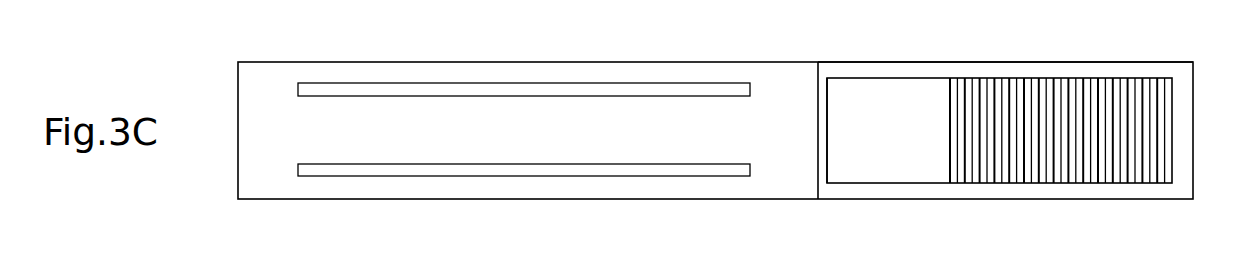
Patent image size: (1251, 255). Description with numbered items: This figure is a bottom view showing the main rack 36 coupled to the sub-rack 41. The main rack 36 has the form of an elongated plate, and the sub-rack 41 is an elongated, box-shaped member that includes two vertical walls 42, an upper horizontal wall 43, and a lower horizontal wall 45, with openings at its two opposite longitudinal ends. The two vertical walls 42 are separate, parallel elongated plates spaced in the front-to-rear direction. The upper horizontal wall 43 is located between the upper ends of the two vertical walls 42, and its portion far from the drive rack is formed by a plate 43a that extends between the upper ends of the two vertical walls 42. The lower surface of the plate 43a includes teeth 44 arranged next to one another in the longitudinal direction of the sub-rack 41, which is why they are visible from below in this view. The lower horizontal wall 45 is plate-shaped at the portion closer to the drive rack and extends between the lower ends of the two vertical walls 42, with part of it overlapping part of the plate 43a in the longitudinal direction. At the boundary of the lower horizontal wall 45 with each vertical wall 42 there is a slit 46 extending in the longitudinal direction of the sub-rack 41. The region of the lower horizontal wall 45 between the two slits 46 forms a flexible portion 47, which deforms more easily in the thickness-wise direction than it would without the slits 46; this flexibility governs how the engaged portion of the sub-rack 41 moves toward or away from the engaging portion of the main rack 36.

The main rack 36 is at (828, 125).
The sub-rack 41 is at (1003, 62).
The vertical walls 42 is at (1187, 70).
The upper horizontal wall 43 is at (999, 130).
The plate 43a is at (871, 92).
The teeth 44 is at (979, 126).
The lower horizontal wall 45 is at (788, 95).
The slit 46 is at (491, 88).
The flexible portion 47 is at (562, 113).